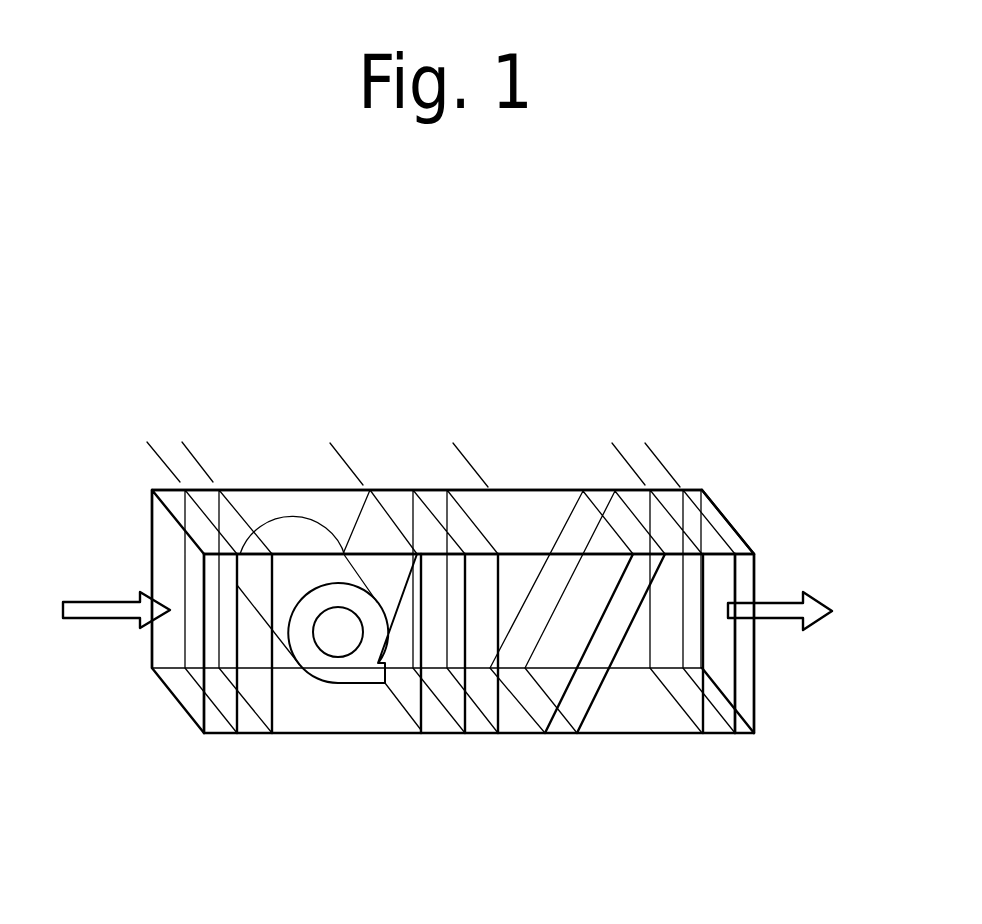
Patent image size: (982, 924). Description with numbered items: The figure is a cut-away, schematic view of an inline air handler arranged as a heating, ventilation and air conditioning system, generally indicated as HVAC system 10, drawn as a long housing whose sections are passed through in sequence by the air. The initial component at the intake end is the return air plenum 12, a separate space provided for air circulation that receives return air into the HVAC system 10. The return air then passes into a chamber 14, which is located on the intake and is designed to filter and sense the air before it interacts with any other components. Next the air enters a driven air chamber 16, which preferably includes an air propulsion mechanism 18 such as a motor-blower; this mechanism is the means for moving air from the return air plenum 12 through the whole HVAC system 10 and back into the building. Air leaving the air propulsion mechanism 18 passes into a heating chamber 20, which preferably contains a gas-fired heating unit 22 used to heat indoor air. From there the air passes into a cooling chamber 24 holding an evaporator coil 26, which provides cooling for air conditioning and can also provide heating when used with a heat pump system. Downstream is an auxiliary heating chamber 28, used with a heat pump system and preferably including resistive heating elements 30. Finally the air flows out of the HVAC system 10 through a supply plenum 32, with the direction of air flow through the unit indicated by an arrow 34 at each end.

The HVAC system 10 is at (722, 478).
The return air plenum 12 is at (150, 537).
The chamber 14 is at (187, 449).
The driven air chamber 16 is at (200, 467).
The air propulsion mechanism 18 is at (338, 645).
The heating chamber 20 is at (338, 448).
The gas-fired heating unit 22 is at (483, 650).
The cooling chamber 24 is at (627, 467).
The evaporator coil 26 is at (560, 680).
The auxiliary heating chamber 28 is at (553, 449).
The resistive heating elements 30 is at (723, 652).
The supply plenum 32 is at (736, 530).
The arrow 34 is at (112, 618).